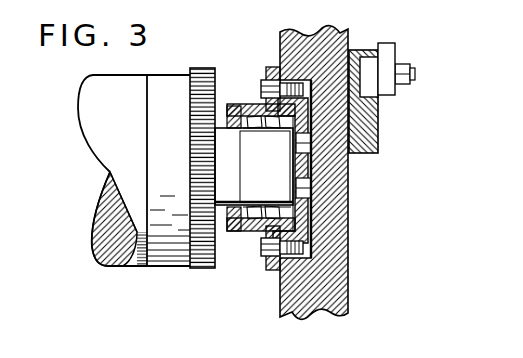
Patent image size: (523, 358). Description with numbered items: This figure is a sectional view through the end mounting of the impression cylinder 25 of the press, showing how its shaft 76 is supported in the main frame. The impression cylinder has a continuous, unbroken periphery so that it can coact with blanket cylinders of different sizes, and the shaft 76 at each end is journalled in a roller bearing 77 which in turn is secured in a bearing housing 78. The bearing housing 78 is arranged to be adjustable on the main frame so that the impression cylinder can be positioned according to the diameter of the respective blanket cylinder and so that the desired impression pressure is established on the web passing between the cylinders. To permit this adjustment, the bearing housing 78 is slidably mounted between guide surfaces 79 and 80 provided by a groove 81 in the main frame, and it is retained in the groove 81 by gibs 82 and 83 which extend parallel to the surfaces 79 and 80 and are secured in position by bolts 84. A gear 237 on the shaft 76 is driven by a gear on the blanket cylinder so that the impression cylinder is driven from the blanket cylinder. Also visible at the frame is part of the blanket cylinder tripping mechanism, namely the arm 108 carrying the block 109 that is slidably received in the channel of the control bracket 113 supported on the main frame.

The shaft knob 25 is at (100, 125).
The gear 237 is at (200, 233).
The shaft 76 is at (265, 155).
The roller bearing 77 is at (248, 108).
The bearing housing 78 is at (255, 232).
The guide surface 79 is at (283, 103).
The guide surface 80 is at (307, 243).
The groove 81 is at (316, 169).
The gib 82 is at (276, 68).
The gib 83 is at (272, 268).
The bolt 84 is at (263, 80).
The arm 108 is at (393, 50).
The block 109 is at (367, 78).
The control bracket 113 is at (370, 127).